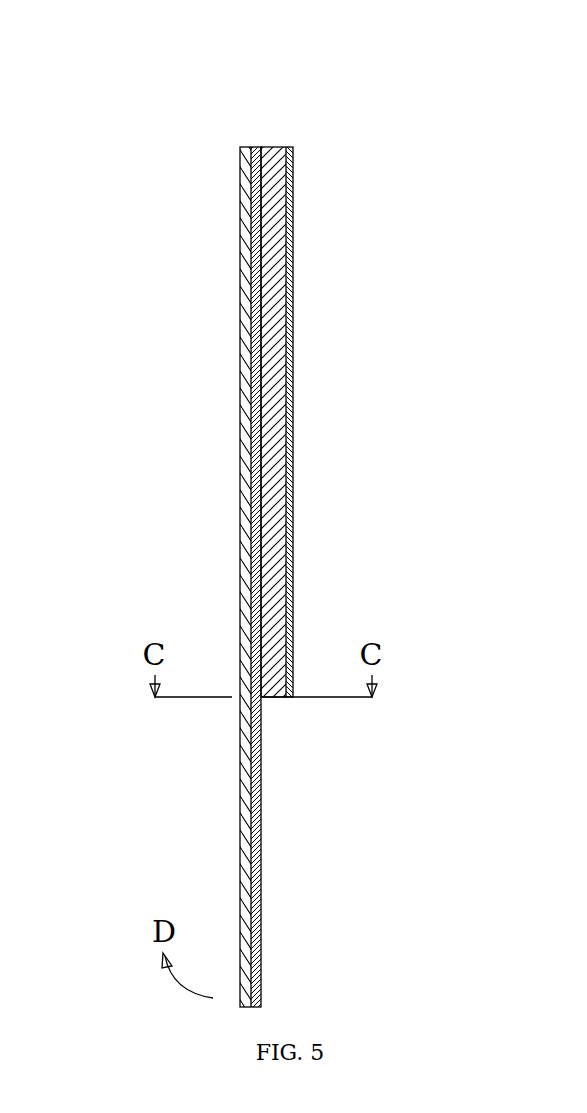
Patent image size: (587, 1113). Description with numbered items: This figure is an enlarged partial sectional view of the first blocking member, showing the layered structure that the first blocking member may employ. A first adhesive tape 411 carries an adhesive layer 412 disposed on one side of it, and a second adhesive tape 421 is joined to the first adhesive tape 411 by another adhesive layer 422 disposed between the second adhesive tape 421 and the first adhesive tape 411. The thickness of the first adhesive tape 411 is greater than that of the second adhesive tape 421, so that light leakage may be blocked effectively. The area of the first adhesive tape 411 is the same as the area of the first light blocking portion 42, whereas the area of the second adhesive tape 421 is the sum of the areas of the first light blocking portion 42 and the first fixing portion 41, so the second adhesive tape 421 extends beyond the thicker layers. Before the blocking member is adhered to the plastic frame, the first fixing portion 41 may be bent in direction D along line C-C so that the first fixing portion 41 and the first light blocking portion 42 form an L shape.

The first fixing portion 41 is at (255, 516).
The first adhesive tape 411 is at (249, 147).
The adhesive layer 412 is at (286, 330).
The first light blocking portion 42 is at (293, 362).
The second adhesive tape 421 is at (240, 220).
The adhesive layer 422 is at (262, 275).